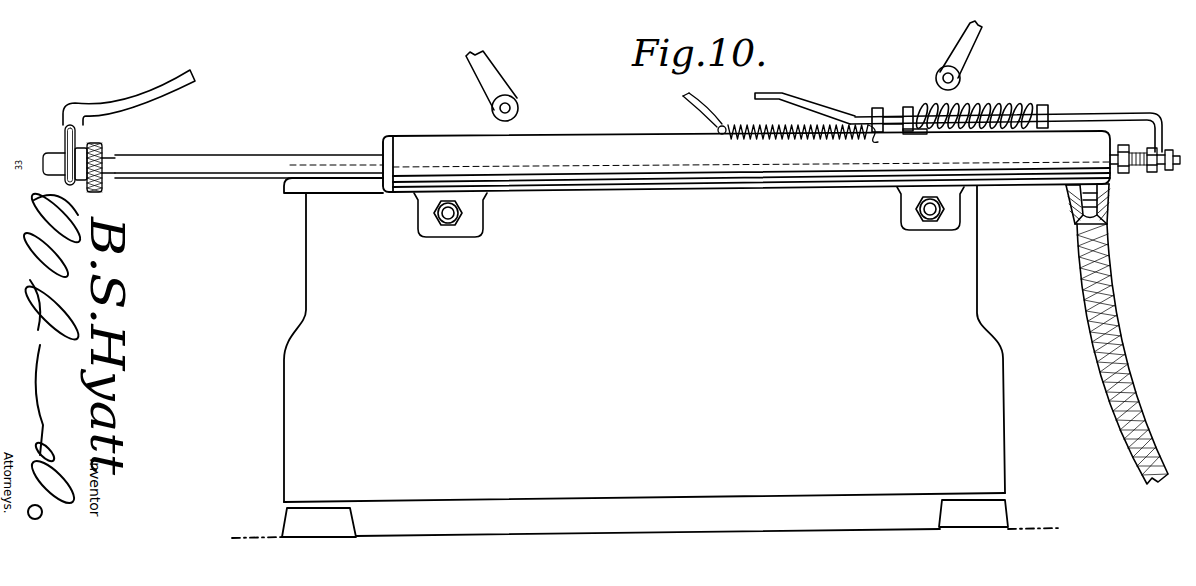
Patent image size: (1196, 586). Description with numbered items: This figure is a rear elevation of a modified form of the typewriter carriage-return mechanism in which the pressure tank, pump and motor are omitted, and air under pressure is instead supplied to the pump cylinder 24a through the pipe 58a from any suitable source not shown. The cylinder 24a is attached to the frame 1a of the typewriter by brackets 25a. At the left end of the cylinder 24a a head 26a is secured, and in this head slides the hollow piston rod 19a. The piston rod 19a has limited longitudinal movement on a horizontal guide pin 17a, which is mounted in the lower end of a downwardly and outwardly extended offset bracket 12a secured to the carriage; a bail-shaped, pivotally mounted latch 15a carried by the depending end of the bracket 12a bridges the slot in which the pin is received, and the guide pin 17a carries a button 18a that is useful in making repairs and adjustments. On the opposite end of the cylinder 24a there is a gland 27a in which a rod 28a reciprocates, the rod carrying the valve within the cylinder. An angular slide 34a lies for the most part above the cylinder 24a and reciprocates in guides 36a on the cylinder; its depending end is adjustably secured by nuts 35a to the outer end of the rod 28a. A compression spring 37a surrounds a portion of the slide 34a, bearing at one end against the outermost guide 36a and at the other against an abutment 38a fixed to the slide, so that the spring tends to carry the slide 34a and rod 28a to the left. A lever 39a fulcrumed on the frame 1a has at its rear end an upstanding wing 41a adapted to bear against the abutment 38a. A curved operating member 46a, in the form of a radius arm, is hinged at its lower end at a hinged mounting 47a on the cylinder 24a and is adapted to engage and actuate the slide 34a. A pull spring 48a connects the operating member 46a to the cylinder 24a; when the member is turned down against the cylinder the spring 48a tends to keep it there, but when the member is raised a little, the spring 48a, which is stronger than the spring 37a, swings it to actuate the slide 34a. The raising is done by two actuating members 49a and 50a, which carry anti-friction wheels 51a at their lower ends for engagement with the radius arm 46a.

The frame 1a is at (296, 311).
The offset bracket 12a is at (190, 68).
The latch 15a is at (65, 137).
The guide pin 17a is at (108, 158).
The button 18a is at (102, 192).
The hollow piston rod 19a is at (231, 158).
The cylinder 24a is at (651, 173).
The brackets 25a is at (477, 228).
The head 26a is at (383, 137).
The gland 27a is at (1123, 173).
The rod 28a is at (1172, 148).
The angular slide 34a is at (1107, 113).
The nuts 35a is at (1170, 172).
The guides 36a is at (877, 108).
The compression spring 37a is at (990, 107).
The abutment 38a is at (915, 107).
The lever 39a is at (905, 134).
The upstanding wing 41a is at (900, 103).
The curved operating member 46a is at (684, 100).
The hinged mounting 47a is at (760, 123).
The pull spring 48a is at (764, 135).
The actuating member 49a is at (493, 92).
The actuating member 50a is at (975, 38).
The anti-friction wheels 51a is at (518, 110).
The pipe 58a is at (1120, 333).